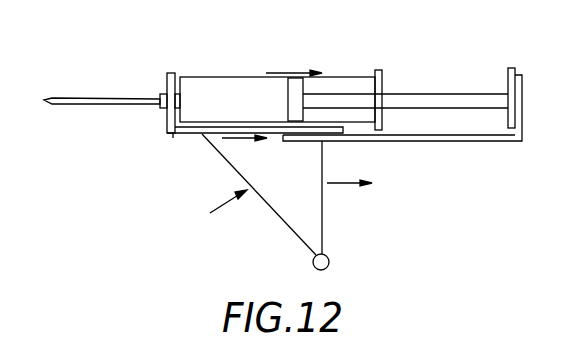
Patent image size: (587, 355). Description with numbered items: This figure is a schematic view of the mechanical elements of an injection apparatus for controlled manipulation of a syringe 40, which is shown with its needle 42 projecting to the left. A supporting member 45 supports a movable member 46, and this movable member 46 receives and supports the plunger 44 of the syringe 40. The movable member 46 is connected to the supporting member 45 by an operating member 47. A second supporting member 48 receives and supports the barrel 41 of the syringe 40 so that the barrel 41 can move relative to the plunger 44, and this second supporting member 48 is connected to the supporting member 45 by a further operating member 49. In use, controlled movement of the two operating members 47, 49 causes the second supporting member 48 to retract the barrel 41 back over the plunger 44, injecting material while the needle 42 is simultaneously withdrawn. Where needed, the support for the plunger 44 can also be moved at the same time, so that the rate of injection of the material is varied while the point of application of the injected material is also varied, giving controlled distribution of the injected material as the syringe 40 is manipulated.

The syringe 40 is at (236, 73).
The barrel 41 is at (198, 78).
The needle 42 is at (65, 99).
The plunger 44 is at (470, 94).
The supporting member 45 is at (329, 262).
The movable member 46 is at (390, 141).
The operating member 47 is at (322, 200).
The second supporting member 48 is at (180, 133).
The operating member 49 is at (245, 170).